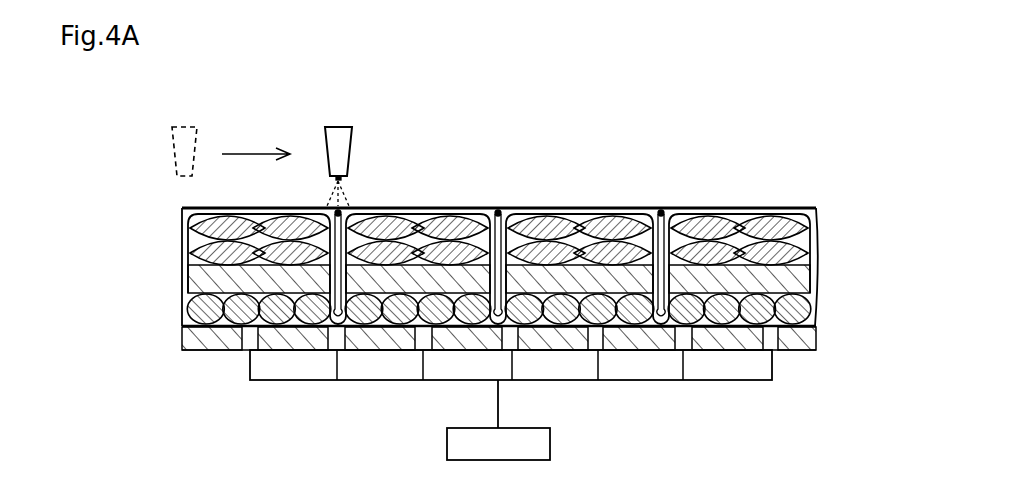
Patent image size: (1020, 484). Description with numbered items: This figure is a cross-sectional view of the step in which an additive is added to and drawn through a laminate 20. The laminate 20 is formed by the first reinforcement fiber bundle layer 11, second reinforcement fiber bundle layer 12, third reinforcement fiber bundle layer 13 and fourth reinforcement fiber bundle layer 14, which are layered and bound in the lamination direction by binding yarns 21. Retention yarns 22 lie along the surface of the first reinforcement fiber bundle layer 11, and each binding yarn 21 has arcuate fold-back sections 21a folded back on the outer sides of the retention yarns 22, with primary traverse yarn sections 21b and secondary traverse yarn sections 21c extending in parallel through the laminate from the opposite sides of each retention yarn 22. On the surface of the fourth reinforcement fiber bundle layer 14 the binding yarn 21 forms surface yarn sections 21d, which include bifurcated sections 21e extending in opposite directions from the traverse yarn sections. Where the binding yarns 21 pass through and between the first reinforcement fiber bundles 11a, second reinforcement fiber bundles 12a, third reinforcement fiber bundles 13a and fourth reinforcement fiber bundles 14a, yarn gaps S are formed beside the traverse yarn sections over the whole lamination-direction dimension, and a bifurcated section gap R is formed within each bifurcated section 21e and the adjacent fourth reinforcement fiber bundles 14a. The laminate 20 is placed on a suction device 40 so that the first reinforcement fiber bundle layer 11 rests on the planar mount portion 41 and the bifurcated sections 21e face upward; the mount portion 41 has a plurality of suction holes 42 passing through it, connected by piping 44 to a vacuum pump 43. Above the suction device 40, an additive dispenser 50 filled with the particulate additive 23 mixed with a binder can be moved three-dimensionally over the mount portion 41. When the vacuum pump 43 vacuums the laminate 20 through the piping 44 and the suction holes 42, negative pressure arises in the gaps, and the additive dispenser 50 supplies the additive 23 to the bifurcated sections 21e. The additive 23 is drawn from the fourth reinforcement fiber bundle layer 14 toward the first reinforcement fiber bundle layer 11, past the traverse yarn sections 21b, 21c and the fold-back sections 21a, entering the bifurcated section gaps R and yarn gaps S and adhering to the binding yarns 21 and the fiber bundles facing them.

The additive dispenser 50 is at (188, 126).
The additive 23 is at (327, 207).
The laminate 20 is at (852, 131).
The binding yarn 21 is at (499, 281).
The fold-back section 21a is at (338, 330).
The primary traverse yarn section 21b is at (300, 318).
The secondary traverse yarn section 21c is at (357, 337).
The surface yarn section 21d is at (613, 212).
The bifurcated section 21e is at (663, 208).
The bifurcated section gap R is at (348, 207).
The yarn gap S is at (391, 214).
The fourth reinforcement fiber bundle layer 14 is at (530, 205).
The fourth reinforcement fiber bundle 14a is at (713, 225).
The third reinforcement fiber bundle layer 13 is at (530, 210).
The third reinforcement fiber bundle 13a is at (748, 248).
The second reinforcement fiber bundle layer 12 is at (529, 231).
The second reinforcement fiber bundle 12a is at (765, 275).
The first reinforcement fiber bundle layer 11 is at (529, 348).
The first reinforcement fiber bundle 11a is at (794, 322).
The retention yarn 22 is at (345, 322).
The suction device 40 is at (617, 390).
The mount portion 41 is at (816, 340).
The suction hole 42 is at (601, 338).
The piping 44 is at (536, 381).
The vacuum pump 43 is at (551, 443).